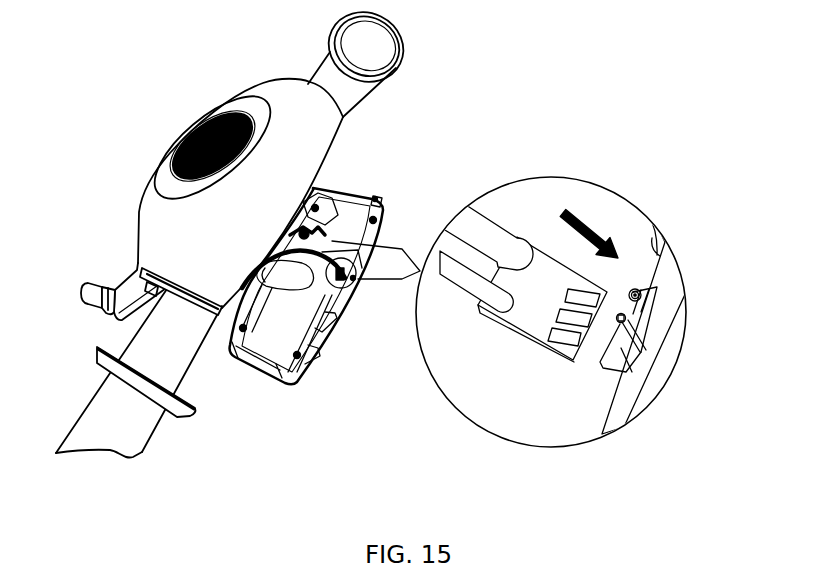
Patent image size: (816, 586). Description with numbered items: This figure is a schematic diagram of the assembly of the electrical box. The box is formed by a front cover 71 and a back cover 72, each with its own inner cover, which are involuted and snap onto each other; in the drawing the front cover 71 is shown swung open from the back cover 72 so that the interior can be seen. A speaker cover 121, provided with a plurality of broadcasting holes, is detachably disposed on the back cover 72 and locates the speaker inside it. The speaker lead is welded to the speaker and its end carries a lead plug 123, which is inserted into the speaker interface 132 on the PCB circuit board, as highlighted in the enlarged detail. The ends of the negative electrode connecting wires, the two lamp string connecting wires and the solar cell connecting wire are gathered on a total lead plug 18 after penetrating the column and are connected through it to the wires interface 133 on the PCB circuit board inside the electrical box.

The total lead plug 18 is at (331, 206).
The front cover 71 is at (328, 351).
The back cover 72 is at (148, 210).
The speaker cover 121 is at (190, 140).
The lead plug 123 is at (550, 273).
The speaker interface 132 is at (632, 368).
The wires interface 133 is at (376, 199).